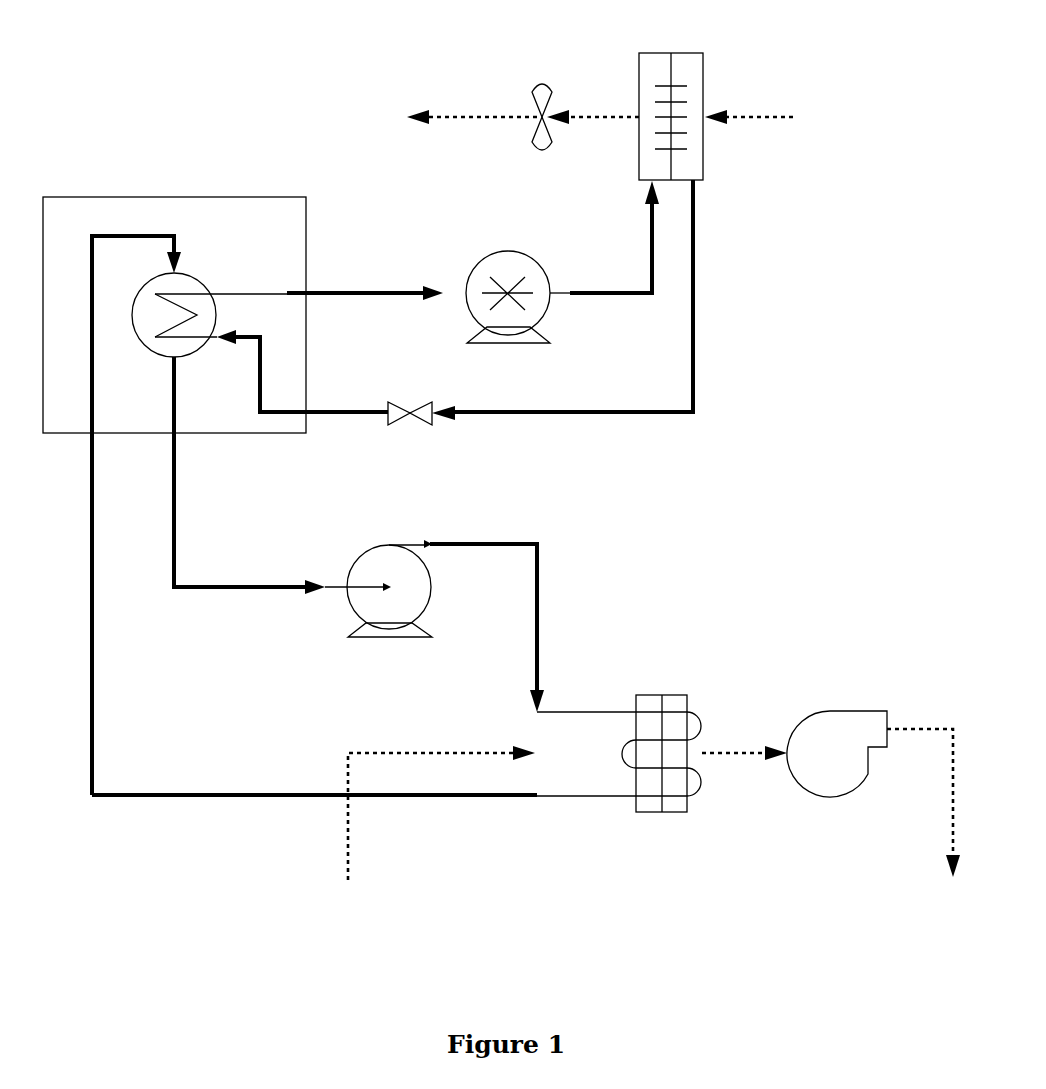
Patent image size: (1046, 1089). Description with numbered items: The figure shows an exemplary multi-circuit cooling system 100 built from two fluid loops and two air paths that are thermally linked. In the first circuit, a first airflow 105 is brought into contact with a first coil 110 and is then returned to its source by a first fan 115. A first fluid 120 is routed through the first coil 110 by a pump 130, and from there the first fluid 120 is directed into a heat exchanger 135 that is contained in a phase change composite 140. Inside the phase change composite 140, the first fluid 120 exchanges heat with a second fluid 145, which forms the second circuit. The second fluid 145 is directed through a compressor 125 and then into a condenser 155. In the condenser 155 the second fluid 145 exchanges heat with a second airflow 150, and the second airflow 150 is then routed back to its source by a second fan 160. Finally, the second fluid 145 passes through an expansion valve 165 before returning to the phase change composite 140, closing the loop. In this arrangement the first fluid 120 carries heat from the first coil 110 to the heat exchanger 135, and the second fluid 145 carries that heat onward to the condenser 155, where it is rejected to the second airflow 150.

The multi-circuit cooling system 100 is at (810, 462).
The first airflow 105 is at (433, 834).
The first coil 110 is at (704, 767).
The first fan 115 is at (873, 794).
The first fluid 120 is at (364, 537).
The compressor 125 is at (562, 278).
The pump 130 is at (480, 626).
The heat exchanger 135 is at (287, 433).
The phase change composite 140 is at (174, 295).
The second fluid 145 is at (562, 320).
The second airflow 150 is at (782, 117).
The condenser 155 is at (671, 95).
The second fan 160 is at (523, 92).
The expansion valve 165 is at (410, 431).